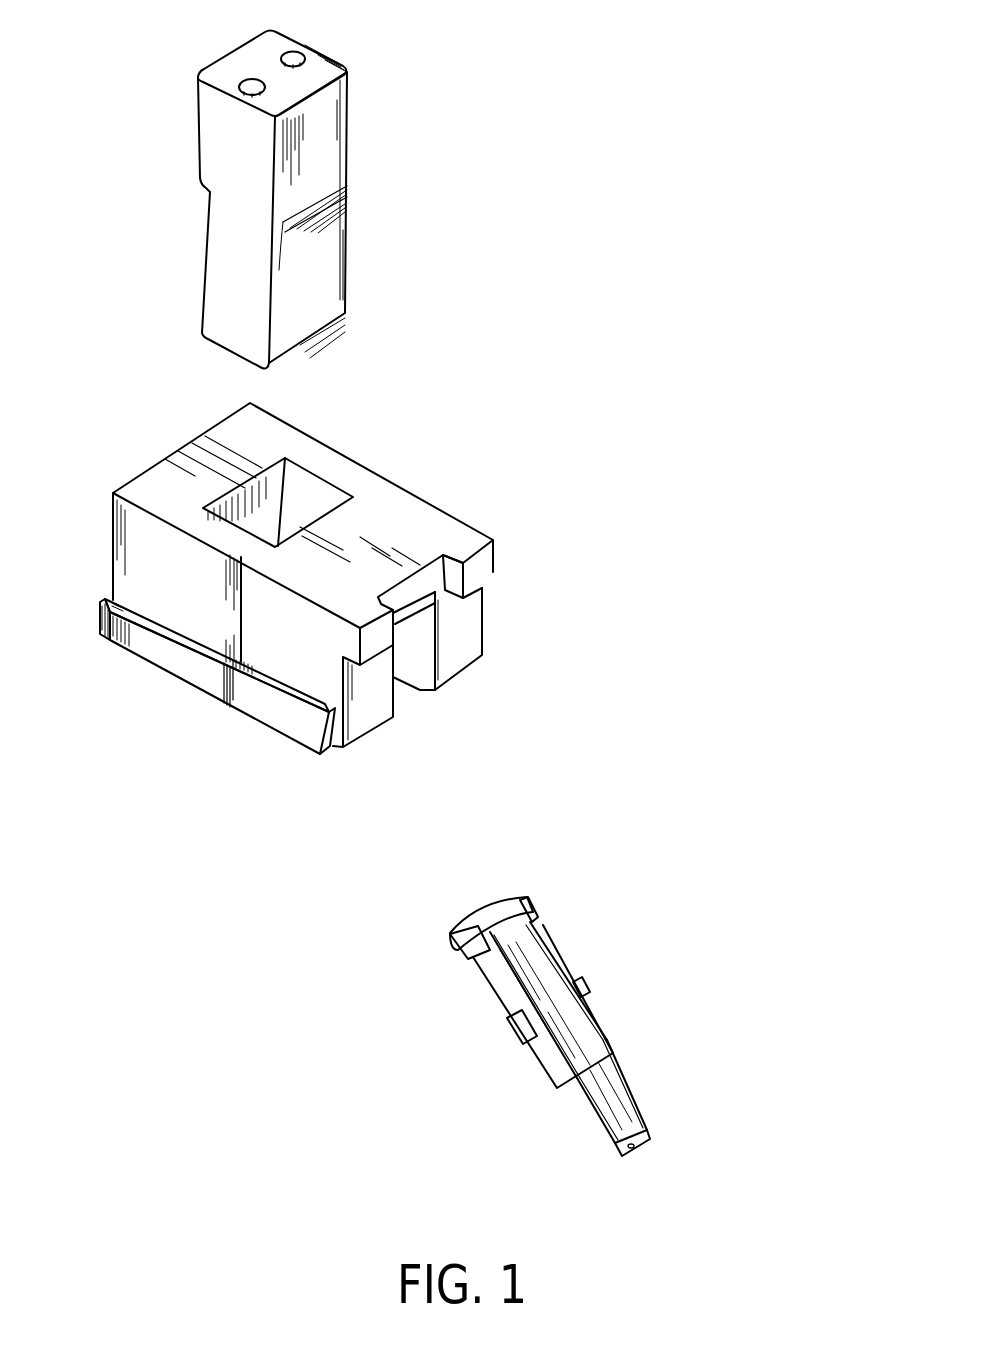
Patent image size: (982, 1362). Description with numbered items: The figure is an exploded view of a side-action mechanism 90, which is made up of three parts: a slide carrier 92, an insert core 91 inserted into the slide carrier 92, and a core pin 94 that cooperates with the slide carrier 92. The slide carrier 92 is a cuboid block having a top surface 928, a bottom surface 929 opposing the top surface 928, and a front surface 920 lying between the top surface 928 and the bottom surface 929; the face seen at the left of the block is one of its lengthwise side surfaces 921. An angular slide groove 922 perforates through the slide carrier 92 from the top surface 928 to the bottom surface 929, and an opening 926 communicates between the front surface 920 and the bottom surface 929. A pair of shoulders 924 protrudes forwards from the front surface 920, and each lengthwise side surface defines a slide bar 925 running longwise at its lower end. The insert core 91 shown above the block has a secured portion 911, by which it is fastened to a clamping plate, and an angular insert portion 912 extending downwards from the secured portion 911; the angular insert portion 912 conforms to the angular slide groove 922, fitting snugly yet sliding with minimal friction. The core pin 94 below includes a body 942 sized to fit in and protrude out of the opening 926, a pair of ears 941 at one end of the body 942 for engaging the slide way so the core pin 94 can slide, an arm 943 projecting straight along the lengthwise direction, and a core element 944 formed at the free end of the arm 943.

The side-action mechanism 90 is at (840, 52).
The insert core 91 is at (482, 150).
The secured portion 911 is at (220, 142).
The angular insert portion 912 is at (325, 270).
The slide carrier 92 is at (534, 476).
The front surface 920 is at (456, 622).
The front wall of housing 921 is at (160, 490).
The angular slide groove 922 is at (305, 497).
The shoulders 924 is at (480, 570).
The slide bar 925 is at (163, 645).
The opening 926 is at (408, 657).
The top surface 928 is at (390, 505).
The bottom surface 929 is at (227, 703).
The core pin 94 is at (386, 922).
The ears 941 is at (530, 912).
The body 942 is at (582, 1030).
The arm 943 is at (617, 1090).
The core element 944 is at (645, 1135).